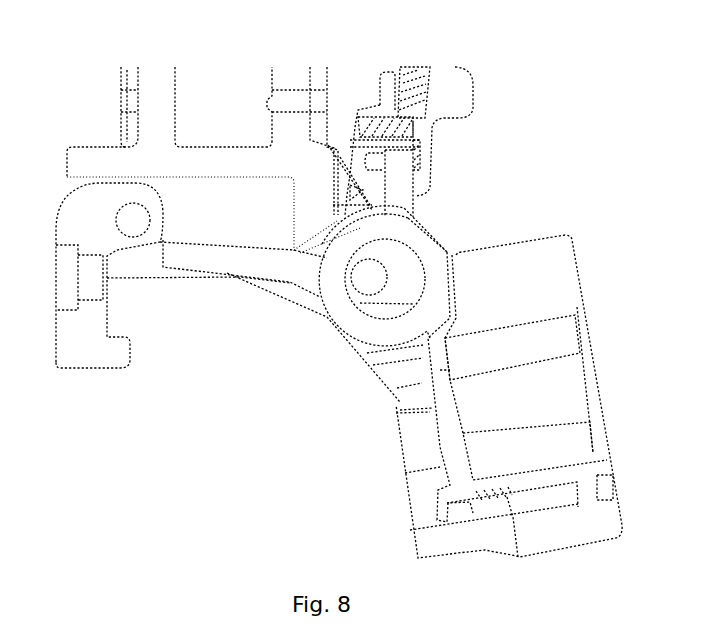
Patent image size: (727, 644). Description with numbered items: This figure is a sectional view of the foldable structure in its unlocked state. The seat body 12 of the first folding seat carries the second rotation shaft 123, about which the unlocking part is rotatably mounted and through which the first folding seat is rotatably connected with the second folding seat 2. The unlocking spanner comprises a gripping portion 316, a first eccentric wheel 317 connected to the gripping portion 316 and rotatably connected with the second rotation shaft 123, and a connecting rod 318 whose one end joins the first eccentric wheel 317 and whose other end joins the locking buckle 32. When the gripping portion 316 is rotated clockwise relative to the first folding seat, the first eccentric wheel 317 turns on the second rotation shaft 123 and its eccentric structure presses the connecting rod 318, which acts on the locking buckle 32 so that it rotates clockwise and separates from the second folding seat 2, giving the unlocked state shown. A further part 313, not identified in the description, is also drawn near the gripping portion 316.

The seat body 12 is at (125, 163).
The locking buckle 32 is at (72, 333).
The second rotation shaft 123 is at (364, 278).
The first eccentric wheel 317 is at (410, 270).
The connecting rod 318 is at (372, 328).
The gripping portion 316 is at (410, 72).
The cap 313 is at (457, 117).
The second folding seat 2 is at (593, 380).